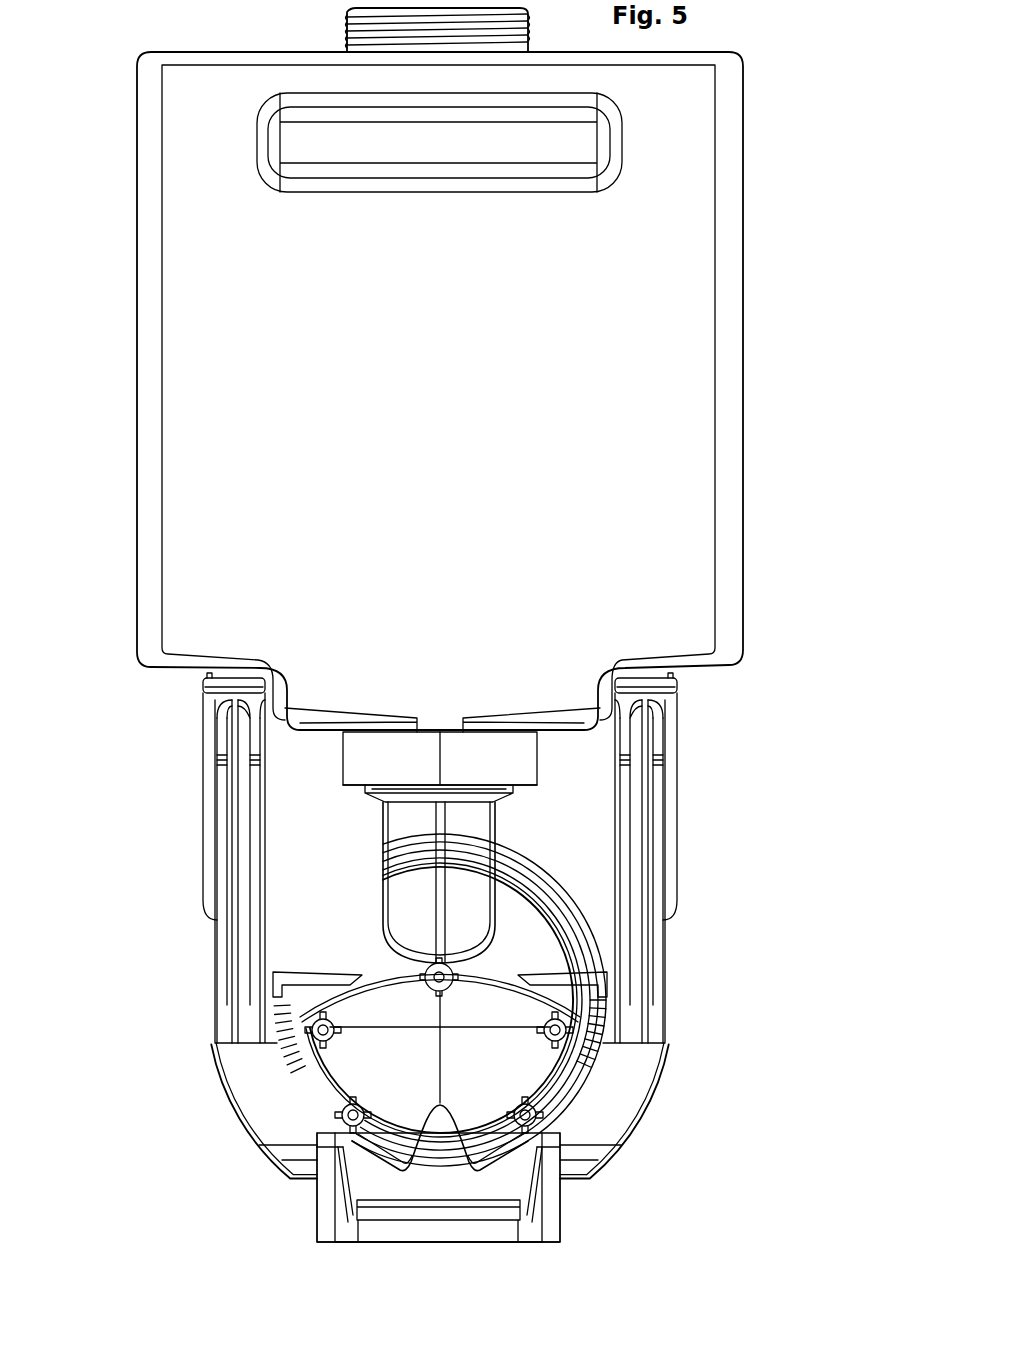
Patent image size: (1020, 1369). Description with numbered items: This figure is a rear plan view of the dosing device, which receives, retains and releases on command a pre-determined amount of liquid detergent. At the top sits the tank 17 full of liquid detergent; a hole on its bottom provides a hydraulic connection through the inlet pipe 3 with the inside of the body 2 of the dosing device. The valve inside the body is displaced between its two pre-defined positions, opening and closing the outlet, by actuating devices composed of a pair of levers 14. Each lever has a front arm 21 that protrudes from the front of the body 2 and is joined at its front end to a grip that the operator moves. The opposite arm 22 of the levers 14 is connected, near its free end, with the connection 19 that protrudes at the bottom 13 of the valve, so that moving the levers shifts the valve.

The tank 17 is at (673, 437).
The front arm 21 is at (210, 720).
The lever 14 is at (223, 842).
The inlet pipe 3 is at (530, 763).
The body 2 is at (528, 1075).
The arm 22 is at (242, 1105).
The connection 19 is at (328, 1173).
The bottom 13 is at (487, 1237).